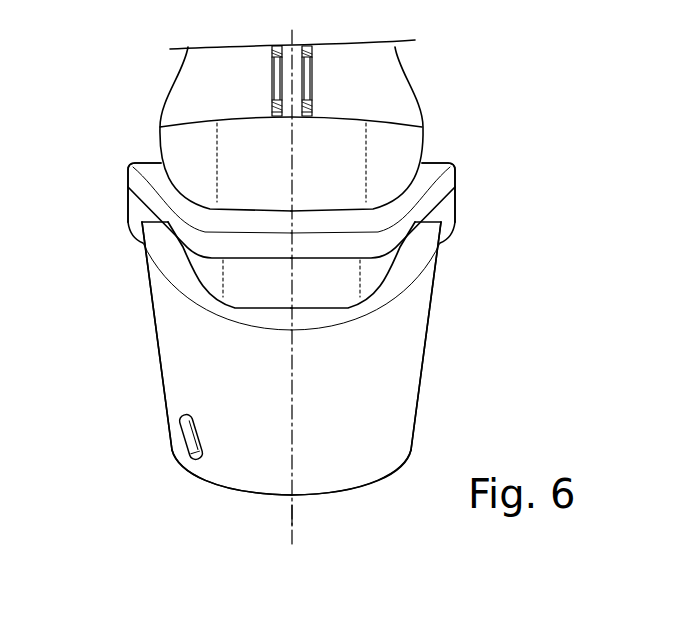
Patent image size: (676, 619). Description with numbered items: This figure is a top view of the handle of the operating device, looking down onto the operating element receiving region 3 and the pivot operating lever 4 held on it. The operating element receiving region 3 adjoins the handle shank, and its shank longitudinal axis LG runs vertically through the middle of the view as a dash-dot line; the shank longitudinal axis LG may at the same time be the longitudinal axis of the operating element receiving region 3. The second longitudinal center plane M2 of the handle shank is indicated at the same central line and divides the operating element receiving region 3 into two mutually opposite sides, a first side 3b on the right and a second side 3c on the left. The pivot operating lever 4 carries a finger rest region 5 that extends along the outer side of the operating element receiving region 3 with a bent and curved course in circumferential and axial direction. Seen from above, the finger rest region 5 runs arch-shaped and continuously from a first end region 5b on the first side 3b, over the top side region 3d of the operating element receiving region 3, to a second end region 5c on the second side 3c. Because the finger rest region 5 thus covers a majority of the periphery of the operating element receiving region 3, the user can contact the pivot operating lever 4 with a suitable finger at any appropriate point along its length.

The operating element receiving region 3 is at (212, 470).
The first side 3b is at (395, 407).
The second side 3c is at (190, 365).
The top side region 3d is at (305, 445).
The pivot operating lever 4 is at (203, 268).
The finger rest region 5 is at (383, 247).
The first end region 5b is at (440, 208).
The second end region 5c is at (137, 209).
The second longitudinal center plane M2 is at (290, 515).
The shank longitudinal axis LG is at (293, 535).